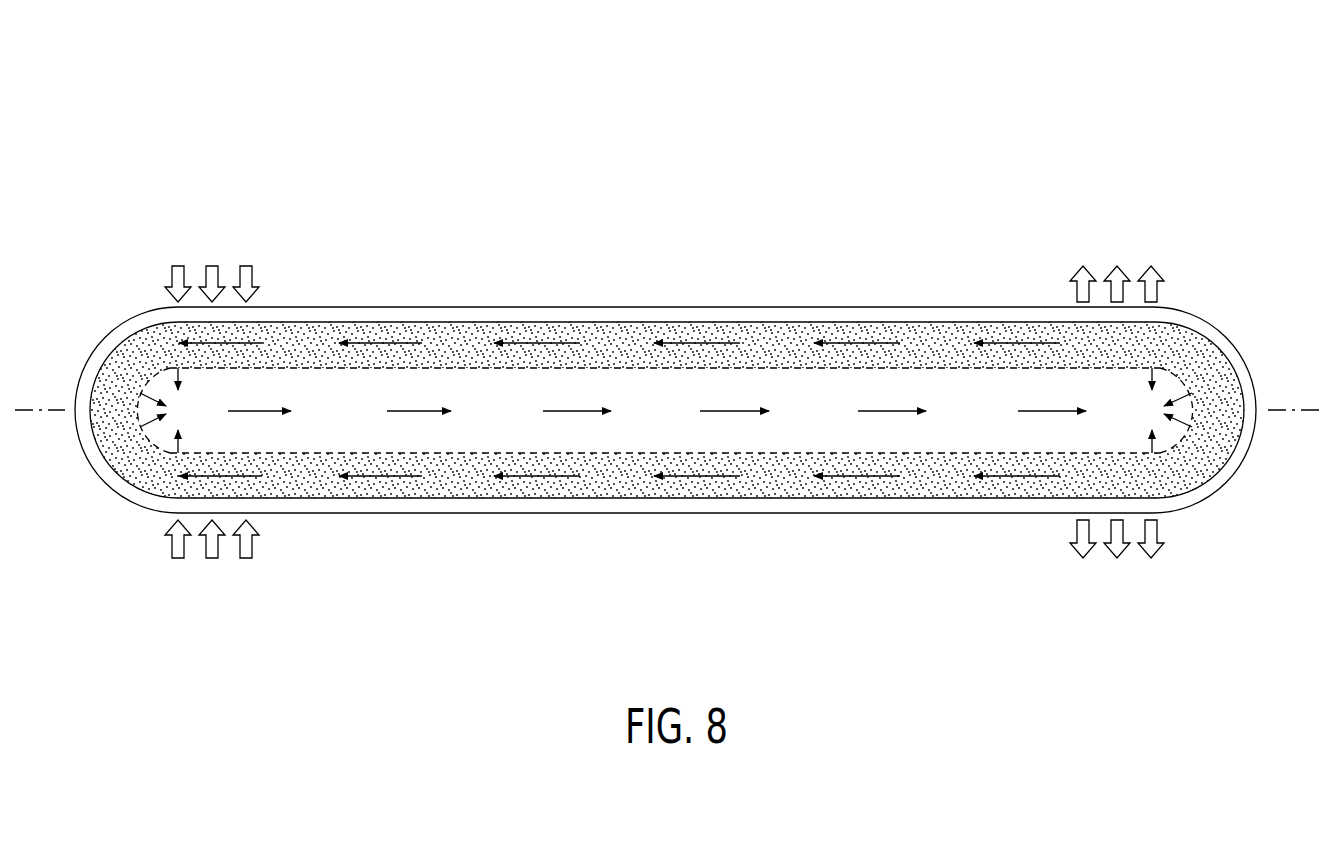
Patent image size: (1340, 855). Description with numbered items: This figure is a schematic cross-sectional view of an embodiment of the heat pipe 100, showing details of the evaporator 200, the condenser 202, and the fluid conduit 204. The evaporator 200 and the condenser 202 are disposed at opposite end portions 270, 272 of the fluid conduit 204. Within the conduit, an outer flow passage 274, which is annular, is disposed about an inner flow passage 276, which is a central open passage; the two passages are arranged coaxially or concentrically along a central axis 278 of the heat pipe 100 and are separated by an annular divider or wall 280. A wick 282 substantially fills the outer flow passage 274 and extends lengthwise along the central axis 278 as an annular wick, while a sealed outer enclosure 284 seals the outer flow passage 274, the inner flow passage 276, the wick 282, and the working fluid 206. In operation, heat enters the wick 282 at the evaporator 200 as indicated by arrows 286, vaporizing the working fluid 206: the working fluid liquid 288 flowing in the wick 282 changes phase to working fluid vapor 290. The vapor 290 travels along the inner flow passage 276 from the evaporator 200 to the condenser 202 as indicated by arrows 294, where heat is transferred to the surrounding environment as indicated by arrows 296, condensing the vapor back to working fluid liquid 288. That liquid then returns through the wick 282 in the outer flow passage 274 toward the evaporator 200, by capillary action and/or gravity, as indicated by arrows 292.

The heat pipe 100 is at (1186, 217).
The evaporator 200 is at (140, 573).
The condenser 202 is at (1223, 521).
The fluid conduit 204 is at (616, 296).
The working fluid 206 is at (118, 376).
The end portion 270 is at (117, 261).
The end portion 272 is at (1268, 336).
The outer flow passage 274 is at (935, 343).
The inner flow passage 276 is at (372, 386).
The central axis 278 is at (1292, 410).
The wall 280 is at (776, 452).
The wick 282 is at (458, 483).
The outer enclosure 284 is at (440, 307).
The arrows 286 is at (252, 288).
The working fluid liquid 288 is at (918, 480).
The working fluid vapor 290 is at (983, 433).
The arrows 292 is at (378, 477).
The arrows 294 is at (258, 410).
The arrows 296 is at (1163, 295).